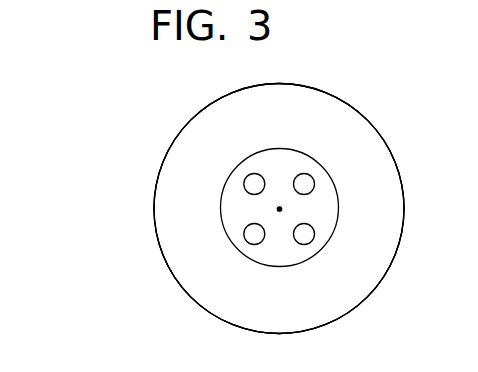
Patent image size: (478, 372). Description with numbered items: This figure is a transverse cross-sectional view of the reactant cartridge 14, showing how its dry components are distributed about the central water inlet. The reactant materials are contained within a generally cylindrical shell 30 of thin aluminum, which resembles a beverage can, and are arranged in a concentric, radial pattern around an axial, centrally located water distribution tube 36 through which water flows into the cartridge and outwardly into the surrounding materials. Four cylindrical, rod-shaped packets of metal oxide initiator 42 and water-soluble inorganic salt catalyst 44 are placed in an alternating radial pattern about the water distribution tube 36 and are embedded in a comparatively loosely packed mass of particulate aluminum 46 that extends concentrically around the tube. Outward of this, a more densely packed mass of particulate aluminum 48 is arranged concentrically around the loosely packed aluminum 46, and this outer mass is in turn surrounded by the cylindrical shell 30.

The reactant cartridge 14 is at (160, 140).
The cylindrical shell 30 is at (158, 250).
The densely packed mass of particulate aluminum 48 is at (291, 126).
The loosely packed mass of particulate aluminum 46 is at (232, 202).
The packets of metal oxide initiator 42 is at (240, 173).
The packets of water-soluble inorganic salt catalyst 44 is at (240, 240).
The water distribution tube 36 is at (279, 218).